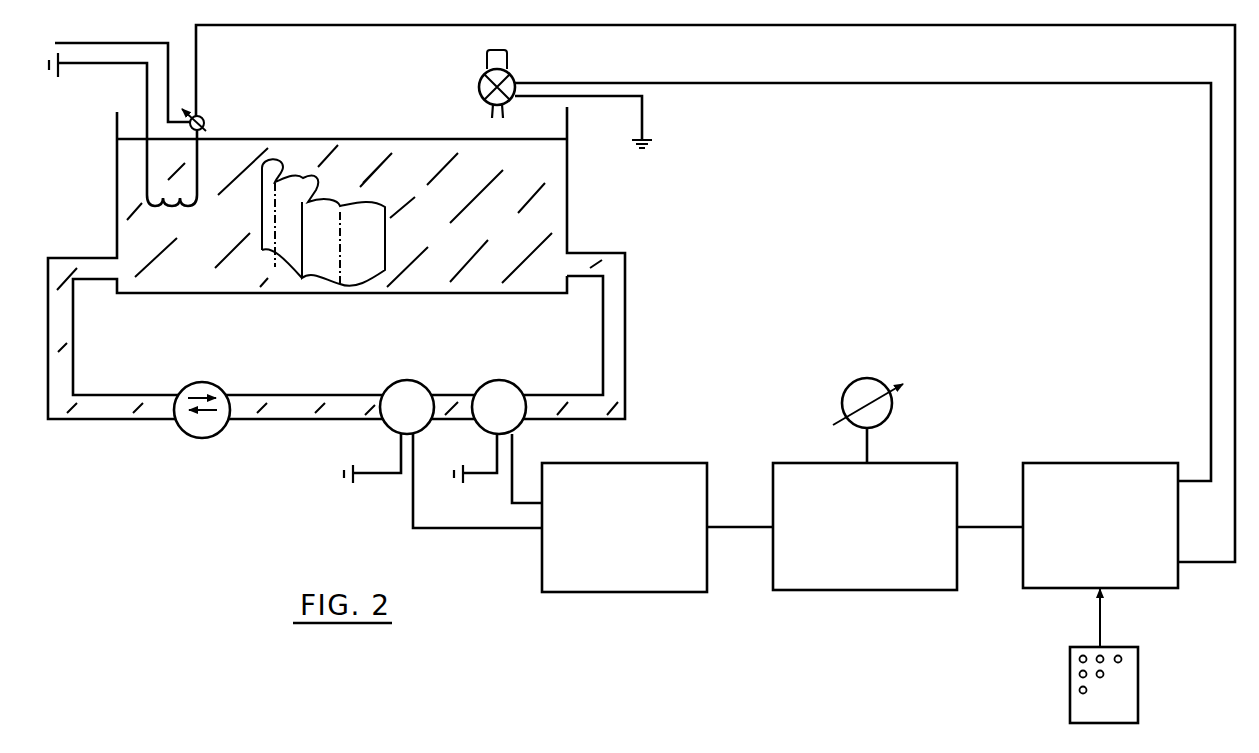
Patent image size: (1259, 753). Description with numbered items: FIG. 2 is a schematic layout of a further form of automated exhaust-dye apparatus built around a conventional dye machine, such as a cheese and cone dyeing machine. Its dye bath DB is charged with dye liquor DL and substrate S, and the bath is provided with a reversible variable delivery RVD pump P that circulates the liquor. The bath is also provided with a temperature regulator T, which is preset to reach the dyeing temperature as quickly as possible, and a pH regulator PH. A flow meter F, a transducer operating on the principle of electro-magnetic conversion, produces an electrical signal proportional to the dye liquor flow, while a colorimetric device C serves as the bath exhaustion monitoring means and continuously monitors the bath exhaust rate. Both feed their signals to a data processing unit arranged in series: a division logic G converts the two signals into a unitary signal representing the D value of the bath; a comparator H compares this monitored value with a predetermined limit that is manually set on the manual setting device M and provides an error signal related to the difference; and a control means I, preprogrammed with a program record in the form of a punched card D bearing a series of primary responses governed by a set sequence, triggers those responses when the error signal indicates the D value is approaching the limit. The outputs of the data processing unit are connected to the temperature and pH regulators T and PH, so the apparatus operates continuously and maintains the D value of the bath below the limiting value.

The temperature regulator T is at (135, 124).
The pH regulator PH is at (509, 76).
The dye bath DB is at (573, 204).
The dye liquor DL is at (342, 213).
The substrate S is at (323, 222).
The pump P is at (202, 404).
The reversible variable delivery RVD is at (202, 454).
The flow meter F is at (443, 454).
The colorimetric device C is at (498, 441).
The division logic G is at (657, 527).
The comparator H is at (898, 526).
The manual setting device M is at (862, 420).
The control means I is at (1100, 525).
The punched card D is at (1104, 656).